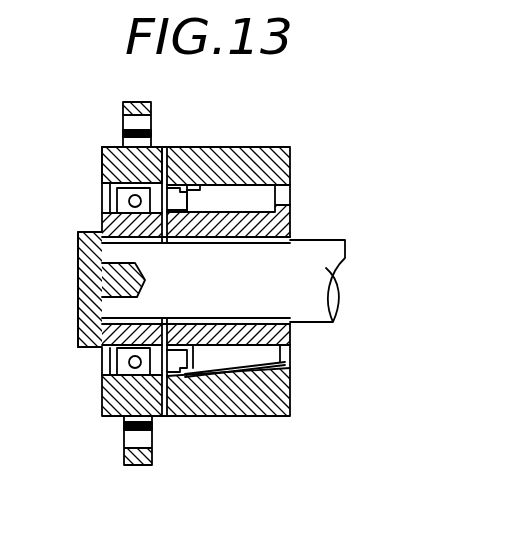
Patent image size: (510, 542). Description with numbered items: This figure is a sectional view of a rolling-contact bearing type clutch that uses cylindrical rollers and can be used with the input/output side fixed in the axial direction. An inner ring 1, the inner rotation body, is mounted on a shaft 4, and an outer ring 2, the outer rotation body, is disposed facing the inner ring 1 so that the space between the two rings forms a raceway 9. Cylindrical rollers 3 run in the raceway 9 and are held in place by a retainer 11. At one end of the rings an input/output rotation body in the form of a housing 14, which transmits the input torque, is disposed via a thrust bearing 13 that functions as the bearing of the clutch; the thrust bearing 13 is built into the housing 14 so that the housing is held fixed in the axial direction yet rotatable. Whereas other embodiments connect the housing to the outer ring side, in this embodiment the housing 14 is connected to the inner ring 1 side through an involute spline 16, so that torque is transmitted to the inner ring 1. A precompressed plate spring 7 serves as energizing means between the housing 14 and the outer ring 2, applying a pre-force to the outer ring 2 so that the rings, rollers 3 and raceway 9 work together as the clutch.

The inner ring 1 is at (290, 208).
The outer ring 2 is at (290, 148).
The cylindrical rollers 3 is at (202, 187).
The shaft 4 is at (325, 298).
The plate spring 7 is at (165, 190).
The raceway 9 is at (173, 364).
The retainer 11 is at (285, 362).
The thrust bearing 13 is at (107, 150).
The housing 14 is at (103, 231).
The involute spline 16 is at (242, 241).